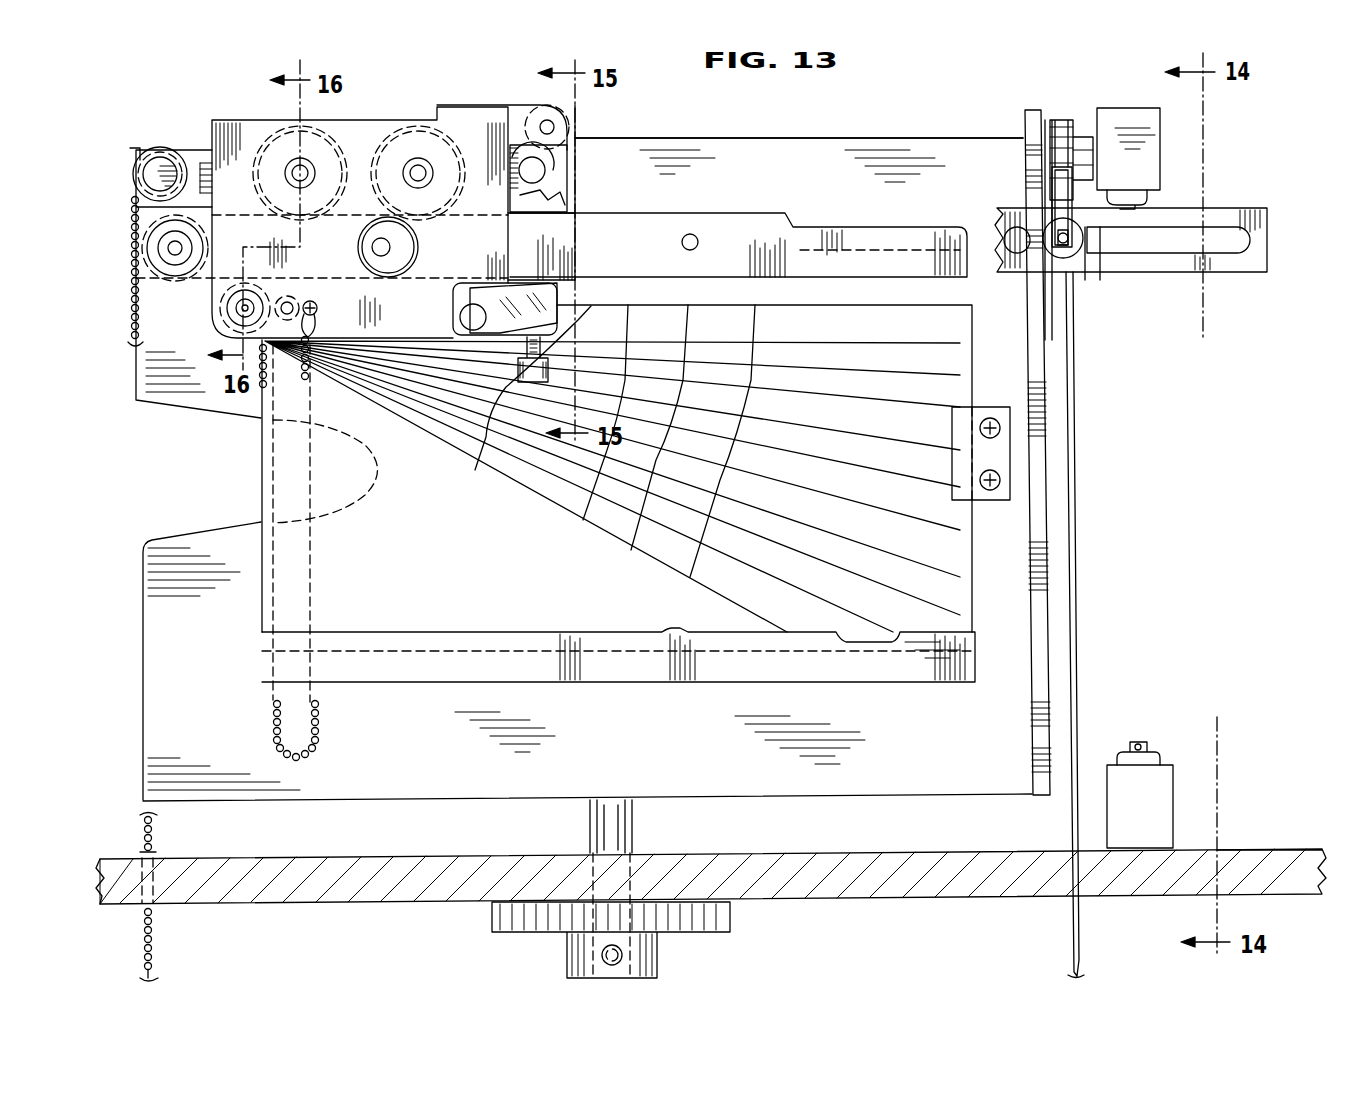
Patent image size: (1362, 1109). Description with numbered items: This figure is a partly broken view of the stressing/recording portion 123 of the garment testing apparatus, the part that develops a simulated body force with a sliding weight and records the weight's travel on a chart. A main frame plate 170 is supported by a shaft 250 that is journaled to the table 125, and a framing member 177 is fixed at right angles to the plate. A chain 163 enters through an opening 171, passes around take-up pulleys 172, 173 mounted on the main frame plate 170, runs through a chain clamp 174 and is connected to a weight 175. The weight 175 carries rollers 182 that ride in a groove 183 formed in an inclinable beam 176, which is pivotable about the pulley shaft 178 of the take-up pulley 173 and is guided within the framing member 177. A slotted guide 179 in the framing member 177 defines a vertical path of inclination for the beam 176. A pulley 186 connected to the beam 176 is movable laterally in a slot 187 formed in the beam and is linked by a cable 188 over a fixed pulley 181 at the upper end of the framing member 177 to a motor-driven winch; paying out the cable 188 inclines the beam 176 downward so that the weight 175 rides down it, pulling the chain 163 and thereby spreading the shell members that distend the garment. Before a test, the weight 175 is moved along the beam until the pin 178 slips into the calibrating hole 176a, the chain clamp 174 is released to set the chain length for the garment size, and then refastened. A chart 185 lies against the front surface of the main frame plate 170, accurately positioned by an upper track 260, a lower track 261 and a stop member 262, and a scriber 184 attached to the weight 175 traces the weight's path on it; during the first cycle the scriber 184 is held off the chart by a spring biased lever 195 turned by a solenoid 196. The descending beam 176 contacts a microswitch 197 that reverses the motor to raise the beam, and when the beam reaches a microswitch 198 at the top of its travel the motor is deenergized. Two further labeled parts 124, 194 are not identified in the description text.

The stressing/recording portion 123 is at (853, 128).
The base 124 is at (1259, 826).
The table 125 is at (327, 858).
The chain 163 is at (131, 300).
The main frame plate 170 is at (200, 148).
The opening 171 is at (140, 850).
The take-up pulley 172 is at (157, 171).
The take-up pulley 173 is at (153, 257).
The chain clamp 174 is at (227, 312).
The weight 175 is at (367, 115).
The inclinable beam 176 is at (742, 222).
The calibrating hole 176a is at (688, 234).
The framing member 177 is at (1040, 532).
The pulley shaft 178 is at (402, 252).
The slotted guide 179 is at (1055, 752).
The fixed pulley 181 is at (1053, 107).
The rollers 182 is at (273, 130).
The groove 183 is at (488, 245).
The scriber 184 is at (473, 317).
The chart 185 is at (840, 452).
The pulley 186 is at (1087, 255).
The slot 187 is at (1230, 248).
The cable 188 is at (1080, 643).
The ribbon ends 194 is at (645, 574).
The spring biased lever 195 is at (548, 196).
The solenoid 196 is at (552, 152).
The microswitch 197 is at (1138, 744).
The microswitch 198 is at (1160, 180).
The shaft 250 is at (620, 838).
The upper track 260 is at (870, 237).
The lower track 261 is at (588, 674).
The stop member 262 is at (990, 455).